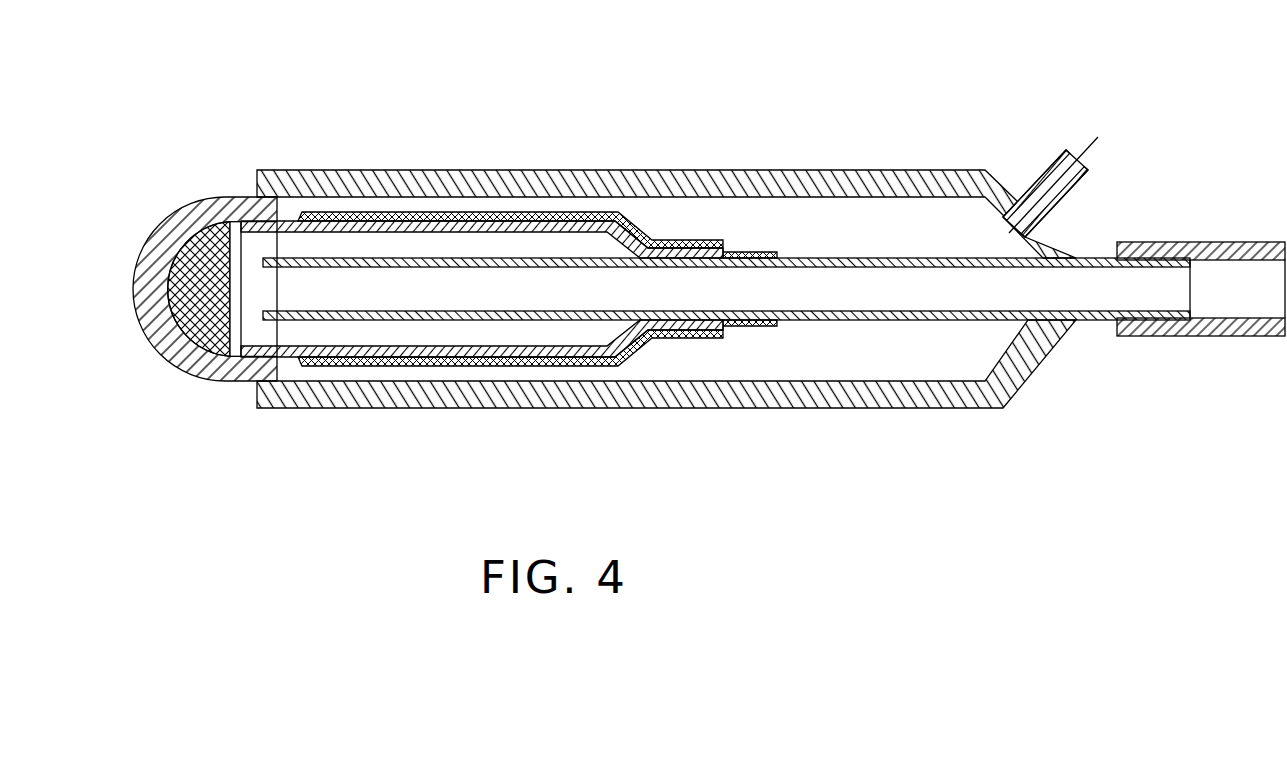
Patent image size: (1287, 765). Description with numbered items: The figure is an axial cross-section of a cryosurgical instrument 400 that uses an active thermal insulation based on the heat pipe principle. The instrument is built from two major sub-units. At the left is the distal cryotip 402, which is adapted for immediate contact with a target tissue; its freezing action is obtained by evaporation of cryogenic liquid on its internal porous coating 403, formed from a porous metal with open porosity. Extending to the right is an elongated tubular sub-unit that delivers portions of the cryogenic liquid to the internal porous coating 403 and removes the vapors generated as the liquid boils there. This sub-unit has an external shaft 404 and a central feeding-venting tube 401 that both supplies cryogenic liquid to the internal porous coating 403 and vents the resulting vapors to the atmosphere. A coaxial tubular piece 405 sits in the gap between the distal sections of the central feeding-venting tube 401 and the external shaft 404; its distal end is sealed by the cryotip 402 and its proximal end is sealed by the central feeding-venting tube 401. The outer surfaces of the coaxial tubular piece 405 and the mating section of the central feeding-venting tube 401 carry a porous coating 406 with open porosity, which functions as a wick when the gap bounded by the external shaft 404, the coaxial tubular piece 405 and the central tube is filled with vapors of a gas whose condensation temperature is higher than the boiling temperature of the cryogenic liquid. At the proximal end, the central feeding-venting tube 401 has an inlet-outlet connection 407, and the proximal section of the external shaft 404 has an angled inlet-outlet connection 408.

The cryosurgical instrument 400 is at (678, 305).
The central feeding-venting tube 401 is at (843, 258).
The distal cryotip 402 is at (143, 243).
The internal porous coating 403 is at (147, 337).
The external shaft 404 is at (553, 170).
The coaxial tubular piece 405 is at (408, 227).
The porous coating 406 is at (358, 363).
The inlet-outlet connection 407 is at (1255, 336).
The inlet-outlet connection 408 is at (1040, 165).